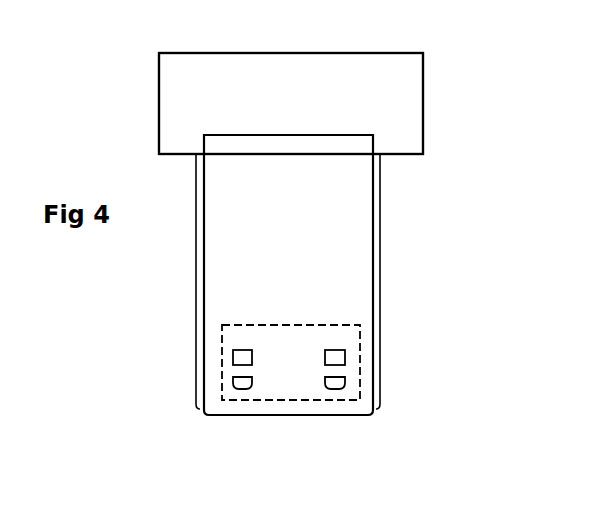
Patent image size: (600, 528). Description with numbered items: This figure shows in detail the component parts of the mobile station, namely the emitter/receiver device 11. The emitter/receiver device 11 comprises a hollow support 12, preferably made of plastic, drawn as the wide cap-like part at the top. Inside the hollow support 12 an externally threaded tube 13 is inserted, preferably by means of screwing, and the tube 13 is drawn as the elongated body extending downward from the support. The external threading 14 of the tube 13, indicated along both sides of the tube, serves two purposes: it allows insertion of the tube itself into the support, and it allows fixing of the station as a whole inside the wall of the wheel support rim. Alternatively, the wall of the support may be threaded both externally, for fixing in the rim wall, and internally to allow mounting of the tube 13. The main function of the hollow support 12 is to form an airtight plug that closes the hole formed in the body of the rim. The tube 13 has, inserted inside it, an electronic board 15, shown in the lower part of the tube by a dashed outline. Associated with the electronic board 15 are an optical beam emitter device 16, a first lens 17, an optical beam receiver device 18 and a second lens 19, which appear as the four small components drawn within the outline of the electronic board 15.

The emitter/receiver device 11 is at (454, 74).
The hollow support 12 is at (170, 107).
The externally threaded tube 13 is at (293, 418).
The external threading 14 is at (197, 243).
The electronic board 15 is at (295, 388).
The optical beam emitter device 16 is at (332, 358).
The first lens 17 is at (332, 379).
The optical beam receiver device 18 is at (233, 359).
The second lens 19 is at (233, 383).